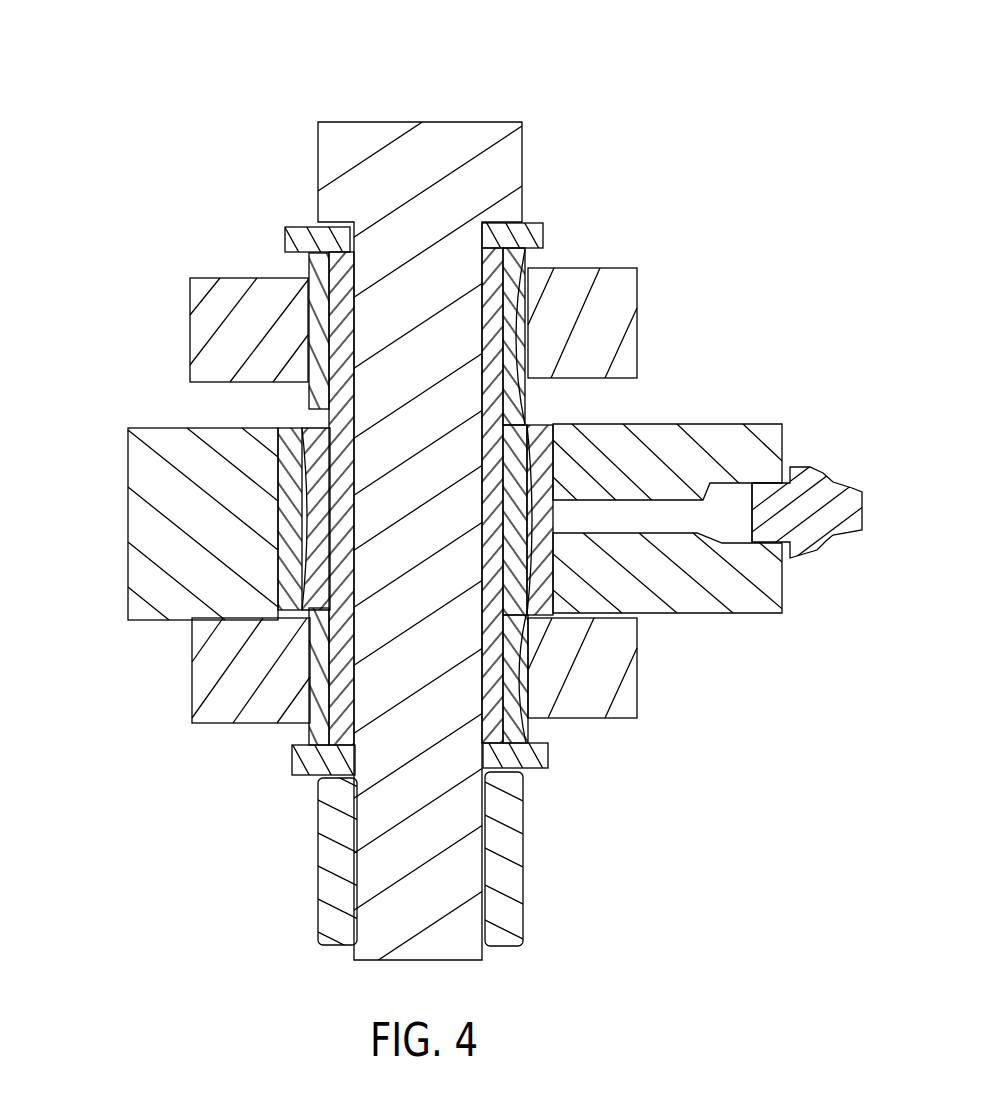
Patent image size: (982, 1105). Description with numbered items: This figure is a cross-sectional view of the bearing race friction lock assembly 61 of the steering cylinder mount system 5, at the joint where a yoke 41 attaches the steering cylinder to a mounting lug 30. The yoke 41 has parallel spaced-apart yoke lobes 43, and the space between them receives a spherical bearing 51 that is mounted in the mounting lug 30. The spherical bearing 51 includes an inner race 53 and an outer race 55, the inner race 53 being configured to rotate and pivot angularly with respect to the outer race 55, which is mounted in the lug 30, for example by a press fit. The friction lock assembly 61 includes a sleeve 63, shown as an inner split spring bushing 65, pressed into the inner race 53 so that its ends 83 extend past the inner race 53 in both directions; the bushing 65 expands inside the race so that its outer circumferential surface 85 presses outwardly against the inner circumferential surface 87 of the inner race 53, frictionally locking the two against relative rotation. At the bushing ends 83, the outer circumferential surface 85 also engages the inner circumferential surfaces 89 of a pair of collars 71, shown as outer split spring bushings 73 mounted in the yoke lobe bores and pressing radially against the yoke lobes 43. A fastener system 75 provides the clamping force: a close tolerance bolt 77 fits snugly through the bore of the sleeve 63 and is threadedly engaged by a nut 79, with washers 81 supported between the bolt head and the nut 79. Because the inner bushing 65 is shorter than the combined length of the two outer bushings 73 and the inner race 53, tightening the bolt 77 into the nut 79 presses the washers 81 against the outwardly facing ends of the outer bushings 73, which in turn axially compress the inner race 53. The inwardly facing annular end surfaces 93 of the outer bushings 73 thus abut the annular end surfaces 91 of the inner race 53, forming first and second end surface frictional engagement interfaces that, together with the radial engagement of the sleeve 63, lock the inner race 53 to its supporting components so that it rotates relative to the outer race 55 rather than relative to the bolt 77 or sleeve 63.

The assembly 5 is at (704, 365).
The mounting lug 30 is at (168, 506).
The yoke 41 is at (187, 492).
The yoke lobes 43 is at (178, 292).
The spherical bearing 51 is at (268, 468).
The inner race 53 is at (312, 538).
The outer race 55 is at (282, 560).
The bearing race friction lock assembly 61 is at (730, 112).
The sleeve 63 is at (273, 441).
The inner split spring bushing 65 is at (345, 265).
The collars 71 is at (244, 498).
The outer split spring bushings 73 is at (292, 264).
The fastener system 75 is at (377, 508).
The bolt 77 is at (440, 143).
The nut 79 is at (316, 886).
The washers 81 is at (303, 227).
The ends of the inner split spring bushing 83 is at (529, 266).
The outer circumferential surface 85 is at (562, 506).
The inner circumferential surface 87 is at (497, 455).
The inner circumferential surfaces 89 is at (459, 515).
The annular end surfaces 91 is at (526, 378).
The annular end surfaces 93 is at (519, 335).